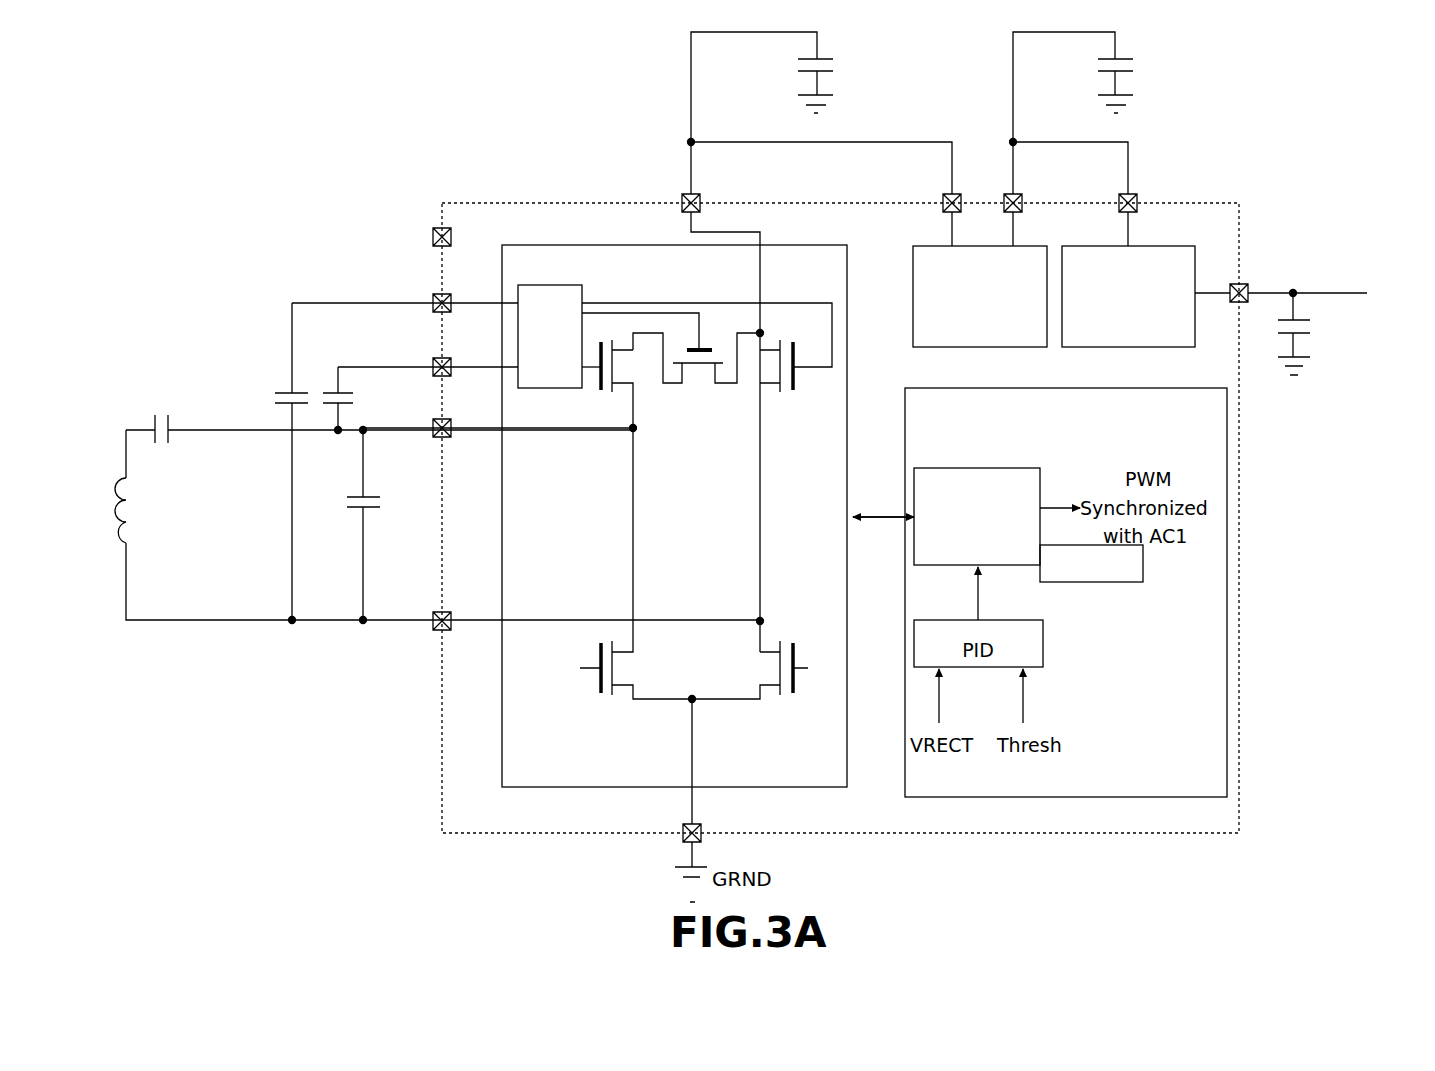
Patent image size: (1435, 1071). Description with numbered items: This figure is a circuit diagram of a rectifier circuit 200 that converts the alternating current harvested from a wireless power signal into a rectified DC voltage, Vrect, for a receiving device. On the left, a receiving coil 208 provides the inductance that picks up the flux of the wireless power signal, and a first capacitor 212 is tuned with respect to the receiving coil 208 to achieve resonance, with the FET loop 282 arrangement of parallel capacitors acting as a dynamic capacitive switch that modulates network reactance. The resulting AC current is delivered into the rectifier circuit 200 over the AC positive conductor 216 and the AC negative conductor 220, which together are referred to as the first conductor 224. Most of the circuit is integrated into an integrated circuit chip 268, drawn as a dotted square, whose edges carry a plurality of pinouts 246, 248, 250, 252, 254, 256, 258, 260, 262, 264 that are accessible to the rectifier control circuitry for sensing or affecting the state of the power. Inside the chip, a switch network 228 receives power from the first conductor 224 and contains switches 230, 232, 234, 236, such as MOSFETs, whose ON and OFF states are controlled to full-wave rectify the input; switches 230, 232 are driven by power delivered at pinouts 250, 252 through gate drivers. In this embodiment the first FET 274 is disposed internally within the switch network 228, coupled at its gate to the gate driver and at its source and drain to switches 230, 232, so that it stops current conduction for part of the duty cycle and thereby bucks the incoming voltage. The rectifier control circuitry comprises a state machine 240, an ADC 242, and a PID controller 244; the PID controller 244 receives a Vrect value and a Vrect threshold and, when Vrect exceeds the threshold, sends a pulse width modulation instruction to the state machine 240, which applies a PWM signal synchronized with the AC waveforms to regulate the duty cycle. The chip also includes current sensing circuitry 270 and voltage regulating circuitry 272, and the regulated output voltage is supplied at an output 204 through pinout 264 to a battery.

The rectifier circuit 200 is at (241, 112).
The output voltage VOUT node 204 is at (1323, 307).
The receiving coil 208 is at (95, 502).
The first capacitor 212 is at (165, 442).
The AC positive conductor 216 is at (209, 437).
The AC negative conductor 220 is at (443, 581).
The first conductor 224 is at (297, 525).
The switch network 228 is at (674, 516).
The switch 230 is at (610, 384).
The switch 232 is at (785, 378).
The switch 234 is at (636, 681).
The switch 236 is at (751, 681).
The state machine 240 is at (977, 516).
The ADC 242 is at (1092, 563).
The PID controller 244 is at (1076, 593).
The pinout 246 is at (439, 612).
The pinout 248 is at (442, 420).
The pinout 250 is at (464, 358).
The pinout 252 is at (464, 294).
The pinout 254 is at (462, 237).
The pinout 256 is at (724, 202).
The pinout 258 is at (824, 529).
The pinout 260 is at (1035, 212).
The pinout 262 is at (1150, 212).
The pinout 264 is at (1261, 300).
The integrated circuit chip 268 is at (556, 194).
The current sensing circuitry 270 is at (980, 296).
The voltage regulating circuitry 272 is at (1128, 296).
The first FET 274 is at (701, 397).
The FET loop 282 is at (171, 434).